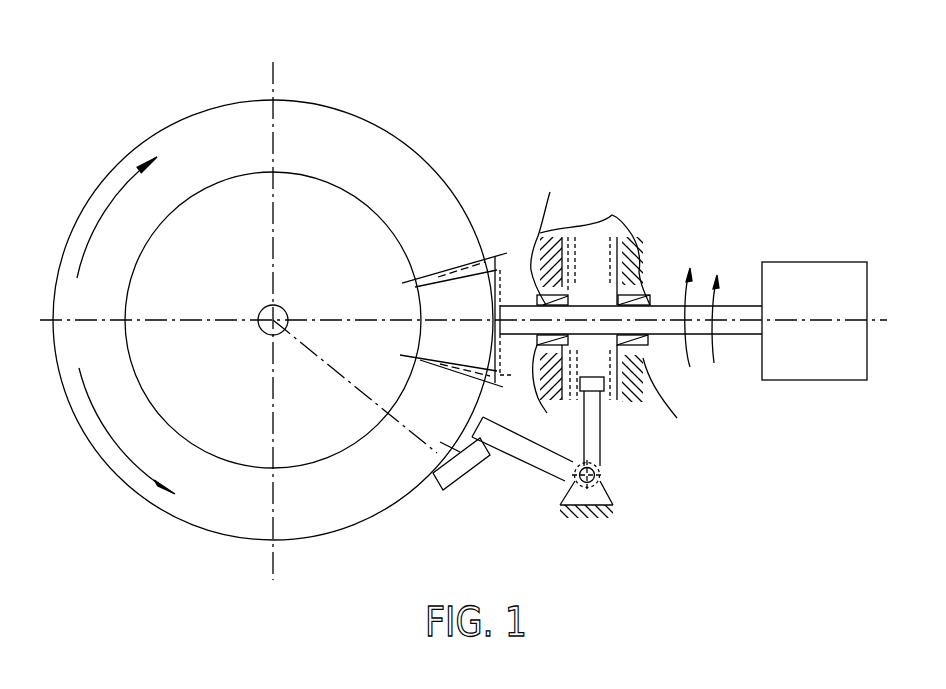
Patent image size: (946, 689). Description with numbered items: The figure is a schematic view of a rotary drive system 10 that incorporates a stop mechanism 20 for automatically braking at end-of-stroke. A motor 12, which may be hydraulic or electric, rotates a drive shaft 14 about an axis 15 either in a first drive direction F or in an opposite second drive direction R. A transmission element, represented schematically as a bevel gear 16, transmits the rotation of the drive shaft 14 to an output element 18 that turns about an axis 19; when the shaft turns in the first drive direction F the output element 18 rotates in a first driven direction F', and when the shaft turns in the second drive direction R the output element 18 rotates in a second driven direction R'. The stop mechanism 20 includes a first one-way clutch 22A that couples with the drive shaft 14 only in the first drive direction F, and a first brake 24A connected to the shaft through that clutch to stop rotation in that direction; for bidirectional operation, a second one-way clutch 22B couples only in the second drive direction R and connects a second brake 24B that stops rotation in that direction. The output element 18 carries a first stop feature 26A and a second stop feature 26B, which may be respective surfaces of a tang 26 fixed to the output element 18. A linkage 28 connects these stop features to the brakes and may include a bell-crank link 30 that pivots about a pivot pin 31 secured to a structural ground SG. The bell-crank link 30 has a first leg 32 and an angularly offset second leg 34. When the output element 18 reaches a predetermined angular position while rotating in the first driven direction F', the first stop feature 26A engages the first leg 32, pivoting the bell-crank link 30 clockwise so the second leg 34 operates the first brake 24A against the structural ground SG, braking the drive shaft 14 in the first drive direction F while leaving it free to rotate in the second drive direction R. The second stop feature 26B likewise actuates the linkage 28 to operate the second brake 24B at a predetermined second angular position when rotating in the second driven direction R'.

The rotary drive system 10 is at (818, 102).
The motor 12 is at (786, 262).
The drive shaft 14 is at (742, 336).
The axis 15 is at (868, 320).
The bevel gear 16 is at (492, 250).
The output element 18 is at (398, 136).
The axis 19 is at (282, 314).
The stop mechanism 20 is at (634, 198).
The first one-way clutch 22A is at (648, 345).
The second one-way clutch 22B is at (564, 284).
The first brake 24A is at (671, 400).
The second brake 24B is at (549, 393).
The tang 26 is at (440, 473).
The first stop feature 26A is at (478, 452).
The second stop feature 26B is at (455, 487).
The linkage 28 is at (643, 498).
The bell-crank link 30 is at (604, 446).
The pivot pin 31 is at (599, 470).
The first leg 32 is at (528, 457).
The second leg 34 is at (598, 418).
The structural ground SG is at (613, 217).
The second drive direction R is at (686, 301).
The first drive direction F is at (724, 300).
The second driven direction R' is at (108, 214).
The first driven direction F' is at (117, 431).